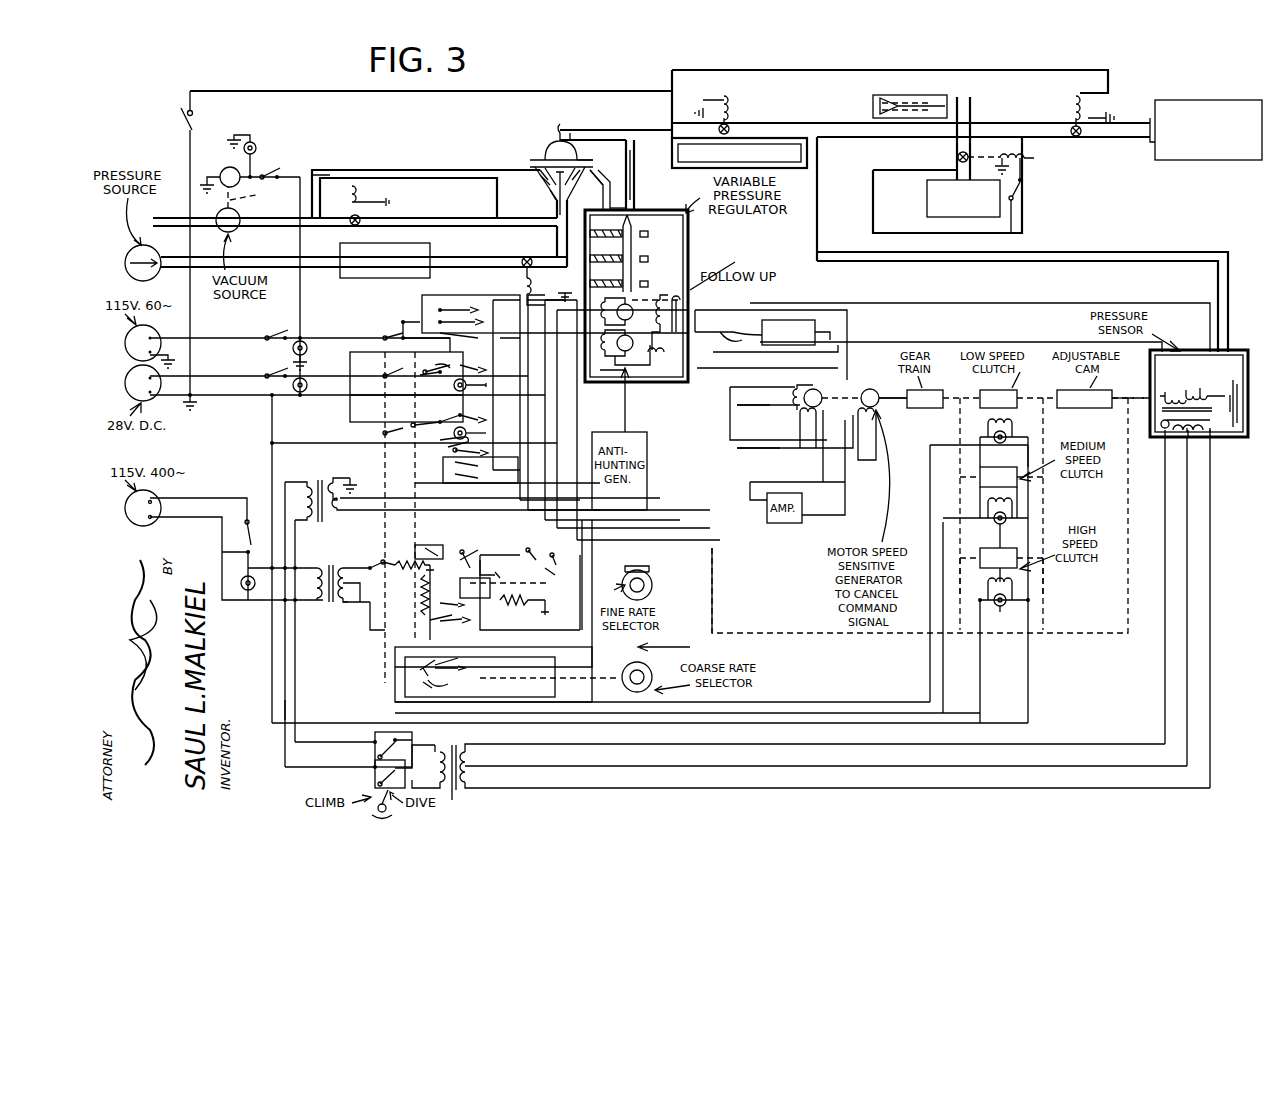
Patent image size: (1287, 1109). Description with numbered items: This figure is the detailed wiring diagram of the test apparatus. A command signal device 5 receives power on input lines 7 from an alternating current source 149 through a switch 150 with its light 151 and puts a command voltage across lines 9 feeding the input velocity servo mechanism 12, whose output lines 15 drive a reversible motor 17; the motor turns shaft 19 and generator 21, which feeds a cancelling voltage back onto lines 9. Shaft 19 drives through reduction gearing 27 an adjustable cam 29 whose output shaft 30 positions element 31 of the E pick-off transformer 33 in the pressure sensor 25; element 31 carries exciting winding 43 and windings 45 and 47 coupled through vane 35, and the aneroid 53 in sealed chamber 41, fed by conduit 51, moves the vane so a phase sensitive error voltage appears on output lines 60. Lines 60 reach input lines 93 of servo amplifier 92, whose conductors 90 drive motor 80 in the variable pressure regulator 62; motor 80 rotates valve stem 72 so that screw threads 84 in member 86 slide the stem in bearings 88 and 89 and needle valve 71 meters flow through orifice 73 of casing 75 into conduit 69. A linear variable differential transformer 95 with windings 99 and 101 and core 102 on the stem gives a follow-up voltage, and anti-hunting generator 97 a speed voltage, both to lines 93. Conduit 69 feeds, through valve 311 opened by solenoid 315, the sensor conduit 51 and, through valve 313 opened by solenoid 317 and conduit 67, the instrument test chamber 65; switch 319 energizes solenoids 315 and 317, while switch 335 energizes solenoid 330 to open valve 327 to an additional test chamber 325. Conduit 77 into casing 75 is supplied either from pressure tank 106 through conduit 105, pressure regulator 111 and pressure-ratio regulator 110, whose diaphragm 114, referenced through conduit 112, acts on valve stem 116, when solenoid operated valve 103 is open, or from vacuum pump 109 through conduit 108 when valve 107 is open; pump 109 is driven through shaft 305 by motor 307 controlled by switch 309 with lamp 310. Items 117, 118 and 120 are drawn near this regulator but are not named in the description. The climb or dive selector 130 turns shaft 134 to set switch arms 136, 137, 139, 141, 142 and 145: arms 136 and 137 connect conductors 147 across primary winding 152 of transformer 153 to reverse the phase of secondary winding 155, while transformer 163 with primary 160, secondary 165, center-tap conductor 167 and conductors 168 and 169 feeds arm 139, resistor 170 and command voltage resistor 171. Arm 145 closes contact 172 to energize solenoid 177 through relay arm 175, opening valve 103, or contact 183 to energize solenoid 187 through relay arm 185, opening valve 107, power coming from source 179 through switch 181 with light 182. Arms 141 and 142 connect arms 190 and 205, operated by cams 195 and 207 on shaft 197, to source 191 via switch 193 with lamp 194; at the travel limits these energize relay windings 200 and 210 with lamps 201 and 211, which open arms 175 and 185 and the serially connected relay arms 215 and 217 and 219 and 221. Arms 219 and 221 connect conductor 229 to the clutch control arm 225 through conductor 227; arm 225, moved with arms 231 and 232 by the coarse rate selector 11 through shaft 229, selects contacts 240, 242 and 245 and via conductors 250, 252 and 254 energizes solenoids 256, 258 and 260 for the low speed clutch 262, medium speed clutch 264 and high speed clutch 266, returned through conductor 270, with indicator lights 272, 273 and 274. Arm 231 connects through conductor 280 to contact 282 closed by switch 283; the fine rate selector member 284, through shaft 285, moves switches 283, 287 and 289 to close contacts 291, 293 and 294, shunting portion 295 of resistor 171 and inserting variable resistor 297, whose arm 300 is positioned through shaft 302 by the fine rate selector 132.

The coarse rate selector arrow 5 is at (670, 647).
The switch box 7 is at (216, 552).
The motor speed sensitive generator lead 9 is at (745, 540).
The coarse rate selector 11 is at (652, 670).
The motor generator set 12 is at (844, 378).
The motor winding lead 15 is at (810, 466).
The motor lead 17 is at (793, 416).
The shaft 19 is at (835, 394).
The gear train shaft 21 is at (882, 407).
The pressure sensor leads 25 is at (1158, 448).
The gear train 27 is at (940, 390).
The adjustable cam 29 is at (1062, 390).
The cam shaft 30 is at (1140, 396).
The sensor winding 31 is at (1186, 392).
The sensor element 33 is at (1222, 436).
The cam output shaft 35 is at (1114, 410).
The pressure sensor 41 is at (1198, 350).
The sensor secondary 43 is at (1195, 432).
The sensor coil 45 is at (1166, 394).
The sensor core 47 is at (1203, 392).
The pressure line 51 is at (1100, 250).
The bellows 53 is at (1235, 380).
The electrical lead 60 is at (993, 342).
The variable pressure regulator 62 is at (700, 240).
The instrument for test 65 is at (1196, 100).
The flow device 67 is at (868, 118).
The pressure conduit 69 is at (755, 122).
The regulator inlet 71 is at (622, 212).
The valve needle 72 is at (632, 226).
The regulator partition 73 is at (606, 225).
The follow up mechanism 75 is at (721, 268).
The conduit 77 is at (605, 188).
The regulator motor 80 is at (620, 304).
The valve seat 84 is at (640, 282).
The ground 86 is at (566, 290).
The valve seat 88 is at (648, 258).
The valve seat 89 is at (648, 236).
The amplifier lead 90 is at (731, 341).
The amplifier 92 is at (786, 320).
The amplifier output lead 93 is at (830, 332).
The follow up potentiometer 95 is at (698, 302).
The generator 97 is at (612, 334).
The generator winding 99 is at (658, 356).
The relay coil 101 is at (671, 322).
The mechanical link 102 is at (655, 288).
The valve 103 is at (526, 256).
The pressure conduit 105 is at (460, 256).
The pressure source 106 is at (152, 258).
The valve 107 is at (358, 226).
The conduit 108 is at (315, 233).
The vacuum pump 109 is at (237, 229).
The regulator inlet 110 is at (576, 148).
The pressure regulator 111 is at (360, 278).
The conduit 112 is at (594, 128).
The pressure ratio regulator 114 is at (540, 158).
The diaphragm 116 is at (580, 165).
The valve body 117 is at (538, 180).
The valve needle 118 is at (548, 195).
The bypass conduit 120 is at (392, 170).
The climb dive switch 130 is at (399, 809).
The fine rate selector 132 is at (652, 580).
The clutch control 134 is at (385, 676).
The relay 136 is at (378, 767).
The relay 137 is at (378, 742).
The potentiometer contact 139 is at (390, 552).
The relay contact 141 is at (382, 434).
The relay contact 142 is at (382, 377).
The relay contact 145 is at (384, 334).
The power lead 147 is at (282, 686).
The 115V 400 cycle source 149 is at (126, 518).
The switch 150 is at (253, 528).
The indicator lamp 151 is at (249, 592).
The transformer primary 152 is at (452, 745).
The transformer 153 is at (466, 804).
The transformer secondary 155 is at (472, 755).
The transformer primary 160 is at (317, 568).
The transformer core 163 is at (338, 571).
The secondary lead 165 is at (343, 604).
The secondary lead 167 is at (378, 628).
The transformer secondary 168 is at (350, 566).
The center tap 169 is at (360, 604).
The potentiometer arm 170 is at (403, 557).
The potentiometer 171 is at (418, 602).
The relay lead 172 is at (395, 340).
The relay 175 is at (480, 479).
The relay coil 177 is at (522, 283).
The 115V 60 cycle source 179 is at (125, 346).
The switch 181 is at (278, 330).
The indicator lamp 182 is at (304, 342).
The lead 183 is at (402, 320).
The relay contact 185 is at (482, 345).
The solenoid 187 is at (360, 195).
The relay contact 190 is at (412, 423).
The 28V DC source 191 is at (125, 386).
The switch 193 is at (278, 368).
The indicator lamp 194 is at (308, 386).
The relay contact 195 is at (440, 442).
The mechanical linkage 197 is at (415, 478).
The relay coil 200 is at (484, 430).
The relay contact 201 is at (455, 420).
The relay contact 205 is at (425, 377).
The relay contact 207 is at (423, 360).
The relay lead 210 is at (488, 386).
The relay coil 211 is at (454, 383).
The relay contact 215 is at (485, 445).
The relay 217 is at (474, 312).
The relay contact 219 is at (488, 412).
The relay contact 221 is at (488, 369).
The clutch control contact 225 is at (461, 659).
The lead 227 is at (590, 481).
The relay lead 229 is at (350, 358).
The potentiometer contact 231 is at (467, 623).
The potentiometer arm 232 is at (428, 622).
The clutch control switch 240 is at (430, 682).
The switch arm 242 is at (415, 661).
The switch contact 245 is at (461, 650).
The lead 250 is at (826, 700).
The lead 252 is at (942, 700).
The lead 254 is at (985, 712).
The low speed clutch coil 256 is at (988, 423).
The medium speed clutch coil 258 is at (988, 502).
The high speed clutch coil 260 is at (986, 578).
The low speed clutch 262 is at (998, 399).
The medium speed clutch 264 is at (1001, 477).
The high speed clutch 266 is at (1001, 573).
The lead 270 is at (274, 465).
The lead 272 is at (1000, 445).
The lead 273 is at (998, 536).
The lead 274 is at (1000, 608).
The resistor 280 is at (546, 611).
The contact 282 is at (562, 572).
The contact 283 is at (540, 548).
The contact 284 is at (563, 551).
The lead 285 is at (500, 546).
The contact 287 is at (473, 552).
The relay 289 is at (429, 548).
The lead 291 is at (494, 566).
The relay 293 is at (505, 585).
The resistor 294 is at (410, 571).
The resistor 295 is at (428, 590).
The resistor 297 is at (522, 607).
The contact 300 is at (463, 602).
The selector pointer 302 is at (600, 588).
The mechanical link 305 is at (256, 196).
The motor 307 is at (222, 168).
The switch 309 is at (270, 170).
The lamp 310 is at (252, 141).
The valve 311 is at (728, 134).
The valve 313 is at (1070, 127).
The solenoid 315 is at (730, 100).
The solenoid 317 is at (1068, 104).
The switch 319 is at (184, 114).
The extra volume 325 is at (927, 192).
The valve 327 is at (956, 157).
The solenoid 330 is at (1012, 155).
The switch 335 is at (1030, 190).